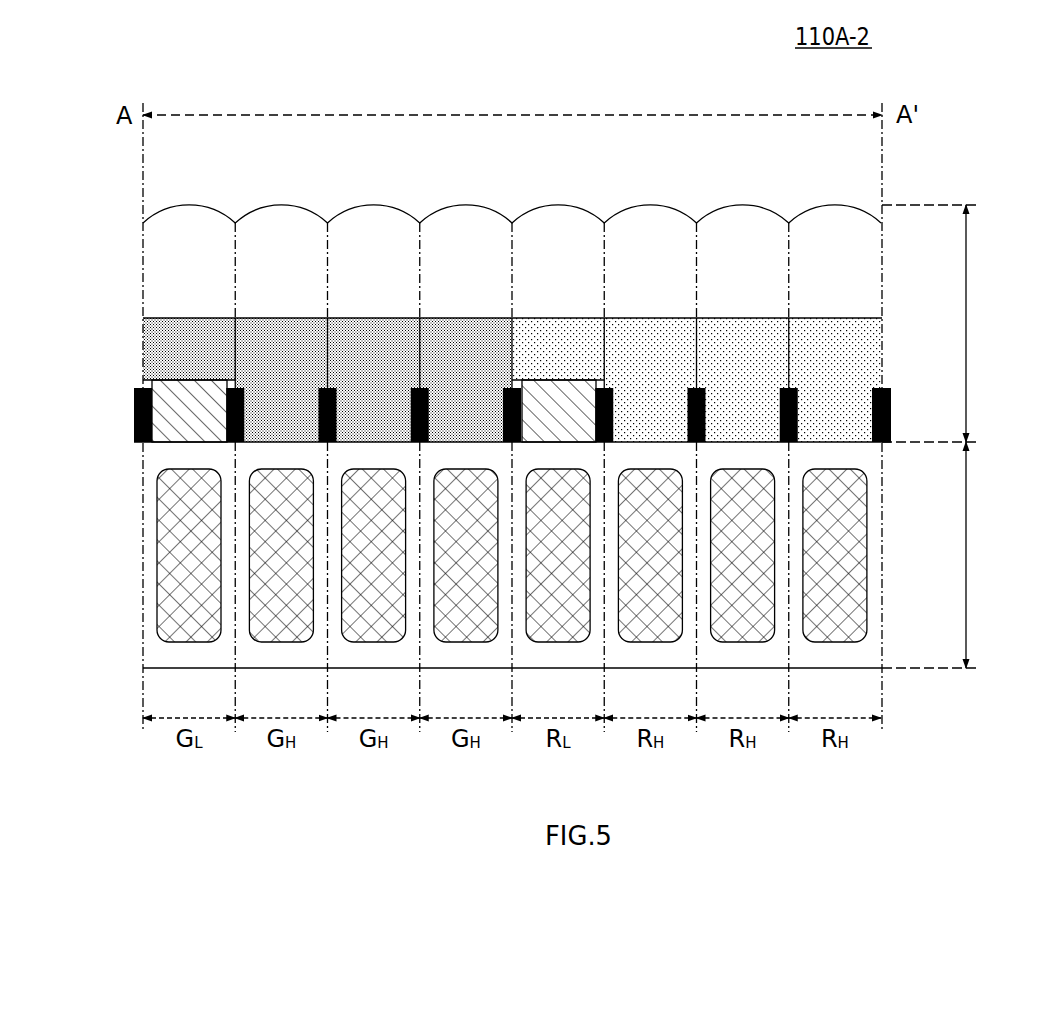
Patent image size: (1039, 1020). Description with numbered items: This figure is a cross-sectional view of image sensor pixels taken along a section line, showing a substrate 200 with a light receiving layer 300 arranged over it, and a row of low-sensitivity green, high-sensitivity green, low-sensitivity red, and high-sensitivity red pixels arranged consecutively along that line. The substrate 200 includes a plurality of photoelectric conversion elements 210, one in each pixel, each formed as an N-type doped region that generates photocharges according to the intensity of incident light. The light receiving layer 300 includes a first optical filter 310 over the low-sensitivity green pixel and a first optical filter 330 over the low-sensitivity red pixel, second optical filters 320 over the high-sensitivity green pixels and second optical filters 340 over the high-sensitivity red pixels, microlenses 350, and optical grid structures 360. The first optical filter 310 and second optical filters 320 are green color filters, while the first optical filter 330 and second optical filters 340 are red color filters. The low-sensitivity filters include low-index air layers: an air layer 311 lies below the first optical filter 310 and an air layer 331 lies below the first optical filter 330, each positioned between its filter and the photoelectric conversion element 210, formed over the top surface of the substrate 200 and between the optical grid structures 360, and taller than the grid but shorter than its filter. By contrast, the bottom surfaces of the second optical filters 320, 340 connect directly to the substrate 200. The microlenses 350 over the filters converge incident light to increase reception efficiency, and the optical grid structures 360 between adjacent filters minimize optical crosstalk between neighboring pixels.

The microlens 350 is at (192, 218).
The first optical filter 310 is at (170, 332).
The air layer 311 is at (199, 392).
The second optical filter 320 is at (278, 332).
The first optical filter 330 is at (541, 332).
The air layer 331 is at (569, 392).
The second optical filter 340 is at (647, 332).
The optical grid structure 360 is at (134, 412).
The photoelectric conversion element 210 is at (857, 520).
The light receiving layer 300 is at (945, 323).
The substrate 200 is at (945, 555).